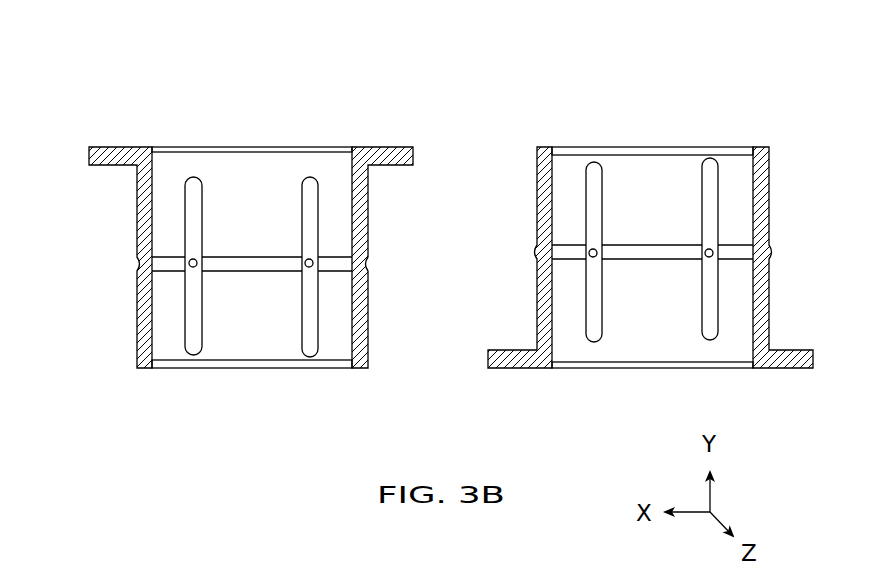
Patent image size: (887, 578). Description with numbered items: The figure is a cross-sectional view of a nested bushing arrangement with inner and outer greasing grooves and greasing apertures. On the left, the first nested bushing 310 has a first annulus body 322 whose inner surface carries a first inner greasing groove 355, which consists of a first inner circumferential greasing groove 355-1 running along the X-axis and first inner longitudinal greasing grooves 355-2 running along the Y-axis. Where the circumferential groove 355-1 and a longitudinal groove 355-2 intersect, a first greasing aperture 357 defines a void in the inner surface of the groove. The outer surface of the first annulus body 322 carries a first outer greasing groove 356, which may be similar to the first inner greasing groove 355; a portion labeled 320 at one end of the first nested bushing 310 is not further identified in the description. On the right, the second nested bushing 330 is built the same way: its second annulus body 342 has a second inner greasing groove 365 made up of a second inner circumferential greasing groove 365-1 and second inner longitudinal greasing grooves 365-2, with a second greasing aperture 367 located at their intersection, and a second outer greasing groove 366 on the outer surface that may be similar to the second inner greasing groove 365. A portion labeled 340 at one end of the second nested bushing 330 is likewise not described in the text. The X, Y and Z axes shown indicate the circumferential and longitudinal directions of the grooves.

The first nested bushing 310 is at (134, 85).
The top plate 320 is at (260, 147).
The first annulus body 322 is at (140, 333).
The first inner greasing groove 355 is at (243, 292).
The first inner circumferential greasing groove 355-1 is at (152, 270).
The first inner longitudinal greasing groove 355-2 is at (190, 197).
The first outer greasing groove 356 is at (140, 262).
The first greasing aperture 357 is at (310, 268).
The second nested bushing 330 is at (760, 108).
The bottom plate 340 is at (656, 368).
The second annulus body 342 is at (765, 318).
The second inner greasing groove 365 is at (655, 228).
The second inner circumferential greasing groove 365-1 is at (753, 250).
The second inner longitudinal greasing groove 365-2 is at (590, 304).
The second outer greasing groove 366 is at (537, 254).
The second greasing aperture 367 is at (592, 252).